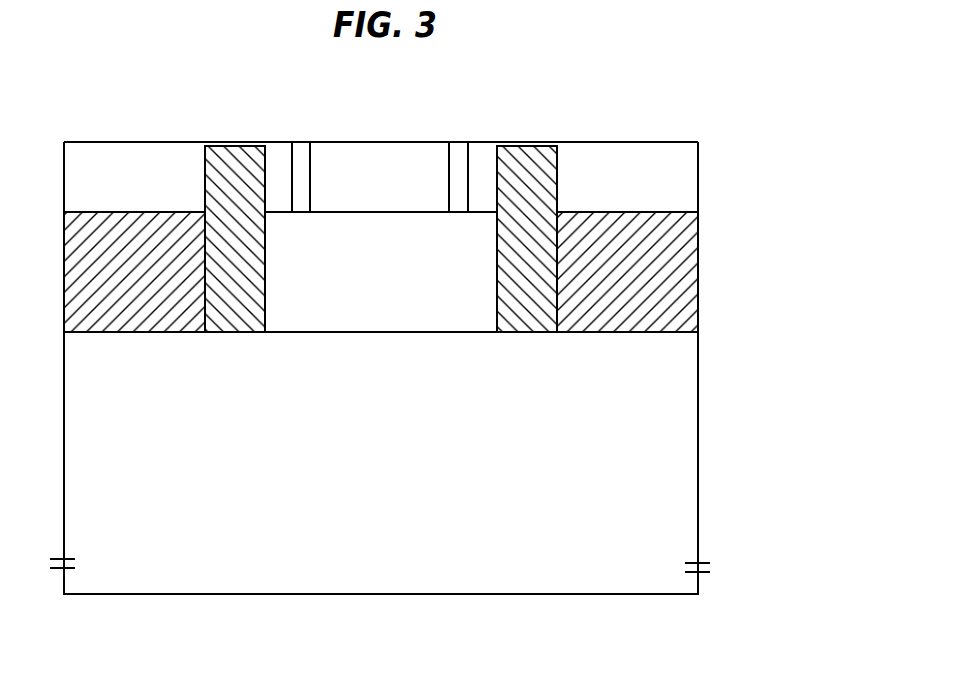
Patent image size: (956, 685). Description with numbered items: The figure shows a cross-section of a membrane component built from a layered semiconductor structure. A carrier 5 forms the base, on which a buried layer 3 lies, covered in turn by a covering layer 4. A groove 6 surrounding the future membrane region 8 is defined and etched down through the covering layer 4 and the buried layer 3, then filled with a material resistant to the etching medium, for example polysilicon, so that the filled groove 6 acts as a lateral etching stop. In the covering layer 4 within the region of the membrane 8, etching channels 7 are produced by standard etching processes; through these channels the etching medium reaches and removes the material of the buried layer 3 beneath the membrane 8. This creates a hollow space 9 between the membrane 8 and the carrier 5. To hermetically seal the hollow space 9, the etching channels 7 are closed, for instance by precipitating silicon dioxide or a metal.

The buried layer 3 is at (688, 303).
The covering layer 4 is at (688, 190).
The carrier 5 is at (687, 483).
The groove 6 is at (228, 153).
The etching channels 7 is at (298, 150).
The membrane 8 is at (377, 150).
The hollow space 9 is at (352, 323).